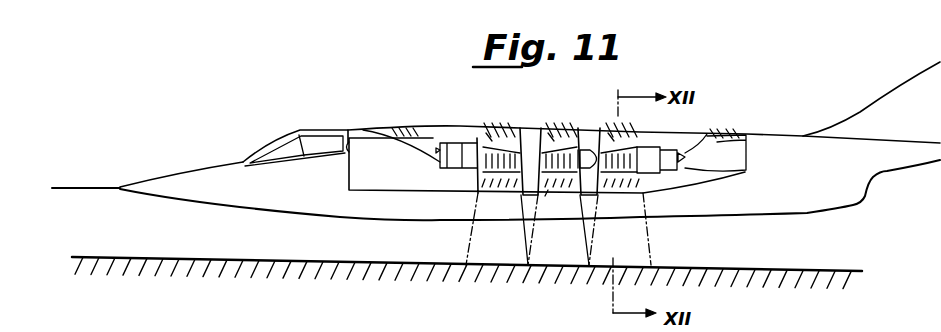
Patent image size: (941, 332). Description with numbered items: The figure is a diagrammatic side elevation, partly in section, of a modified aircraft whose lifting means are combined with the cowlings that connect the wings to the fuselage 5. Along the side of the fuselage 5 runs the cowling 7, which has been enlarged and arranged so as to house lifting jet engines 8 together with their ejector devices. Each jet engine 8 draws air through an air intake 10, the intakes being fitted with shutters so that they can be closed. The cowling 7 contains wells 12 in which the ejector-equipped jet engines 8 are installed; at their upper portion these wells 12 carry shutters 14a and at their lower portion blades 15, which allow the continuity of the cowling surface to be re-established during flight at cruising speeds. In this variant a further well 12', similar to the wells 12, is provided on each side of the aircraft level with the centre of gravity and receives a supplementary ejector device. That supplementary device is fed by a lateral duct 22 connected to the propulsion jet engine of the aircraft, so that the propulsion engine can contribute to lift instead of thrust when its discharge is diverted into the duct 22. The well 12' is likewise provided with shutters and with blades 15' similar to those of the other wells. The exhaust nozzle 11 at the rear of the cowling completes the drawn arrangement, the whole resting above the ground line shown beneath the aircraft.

The fuselage 5 is at (766, 150).
The cowling 7 is at (363, 180).
The jet engine 8 is at (463, 169).
The air intake 10 is at (403, 126).
The exhaust nozzle 11 is at (708, 150).
The well 12 is at (570, 115).
The well 12' is at (563, 117).
The shutters 14a is at (552, 127).
The blades 15 is at (560, 215).
The blades 15' is at (559, 215).
The lateral duct 22 is at (591, 153).